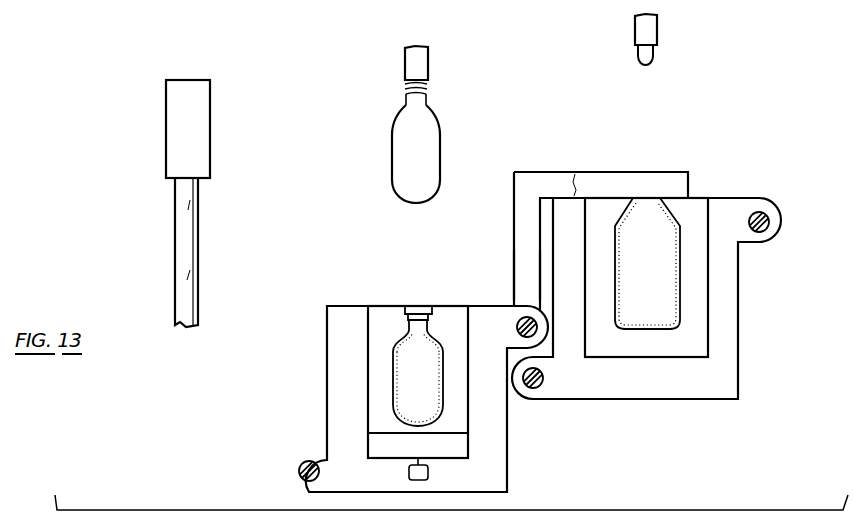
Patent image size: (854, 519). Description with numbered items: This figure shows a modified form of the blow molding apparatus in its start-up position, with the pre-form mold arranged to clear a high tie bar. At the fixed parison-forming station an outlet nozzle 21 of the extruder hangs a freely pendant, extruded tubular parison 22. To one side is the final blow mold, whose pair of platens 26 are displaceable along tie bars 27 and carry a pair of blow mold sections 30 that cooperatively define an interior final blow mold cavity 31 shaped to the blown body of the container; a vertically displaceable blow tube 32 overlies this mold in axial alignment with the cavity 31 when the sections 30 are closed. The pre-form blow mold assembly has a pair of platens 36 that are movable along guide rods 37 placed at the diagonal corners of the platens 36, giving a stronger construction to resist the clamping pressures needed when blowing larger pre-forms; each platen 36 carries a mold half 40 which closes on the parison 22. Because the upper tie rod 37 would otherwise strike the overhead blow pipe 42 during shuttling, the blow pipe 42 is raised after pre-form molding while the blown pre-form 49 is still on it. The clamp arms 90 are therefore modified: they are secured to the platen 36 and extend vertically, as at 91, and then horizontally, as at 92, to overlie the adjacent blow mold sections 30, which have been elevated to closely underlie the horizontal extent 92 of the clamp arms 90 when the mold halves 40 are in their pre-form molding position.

The outlet nozzle 21 is at (168, 145).
The tubular parison 22 is at (191, 236).
The platens 26 is at (664, 390).
The tie bars 27 is at (770, 222).
The blow mold sections 30 is at (700, 278).
The final blow mold cavity 31 is at (672, 315).
The blow tube 32 is at (655, 35).
The pre-form mold platens 36 is at (508, 463).
The tie rods 37 is at (518, 320).
The mold half 40 is at (383, 396).
The blow pipe 42 is at (430, 60).
The blown pre-form 49 is at (435, 150).
The clamp arms 90 is at (570, 163).
The vertical extent of clamp arm 91 is at (514, 237).
The horizontal extent of clamp arm 92 is at (625, 178).